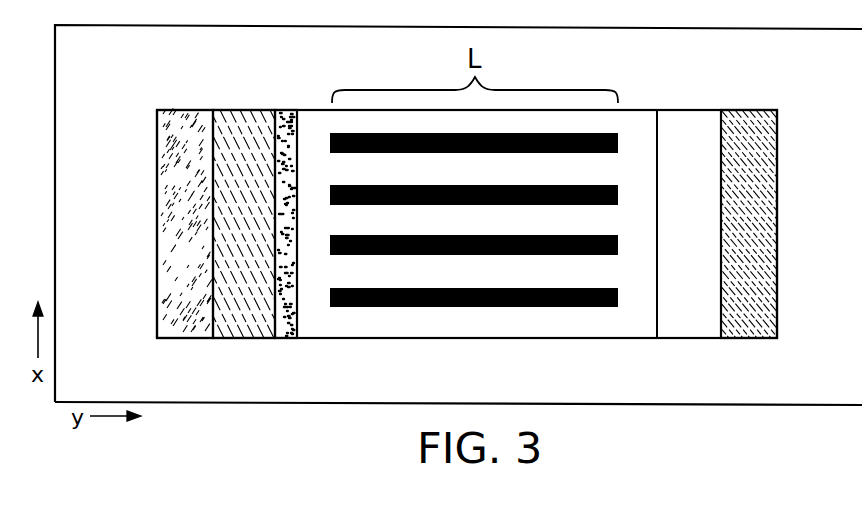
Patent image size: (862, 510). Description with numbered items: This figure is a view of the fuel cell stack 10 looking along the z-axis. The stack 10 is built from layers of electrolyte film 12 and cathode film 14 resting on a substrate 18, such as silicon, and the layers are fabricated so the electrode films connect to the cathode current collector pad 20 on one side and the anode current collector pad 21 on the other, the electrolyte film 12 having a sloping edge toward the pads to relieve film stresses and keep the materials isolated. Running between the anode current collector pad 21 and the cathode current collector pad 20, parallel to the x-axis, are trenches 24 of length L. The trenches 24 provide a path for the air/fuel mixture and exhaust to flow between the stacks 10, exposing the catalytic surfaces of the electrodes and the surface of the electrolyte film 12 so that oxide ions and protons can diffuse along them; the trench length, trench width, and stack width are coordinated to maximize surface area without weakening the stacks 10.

The stack 10 is at (342, 270).
The electrolyte film 12 is at (285, 320).
The cathode film 14 is at (242, 317).
The substrate 18 is at (861, 363).
The cathode current collector pad 20 is at (200, 327).
The anode current collector pad 21 is at (760, 122).
The trenches 24 is at (597, 307).